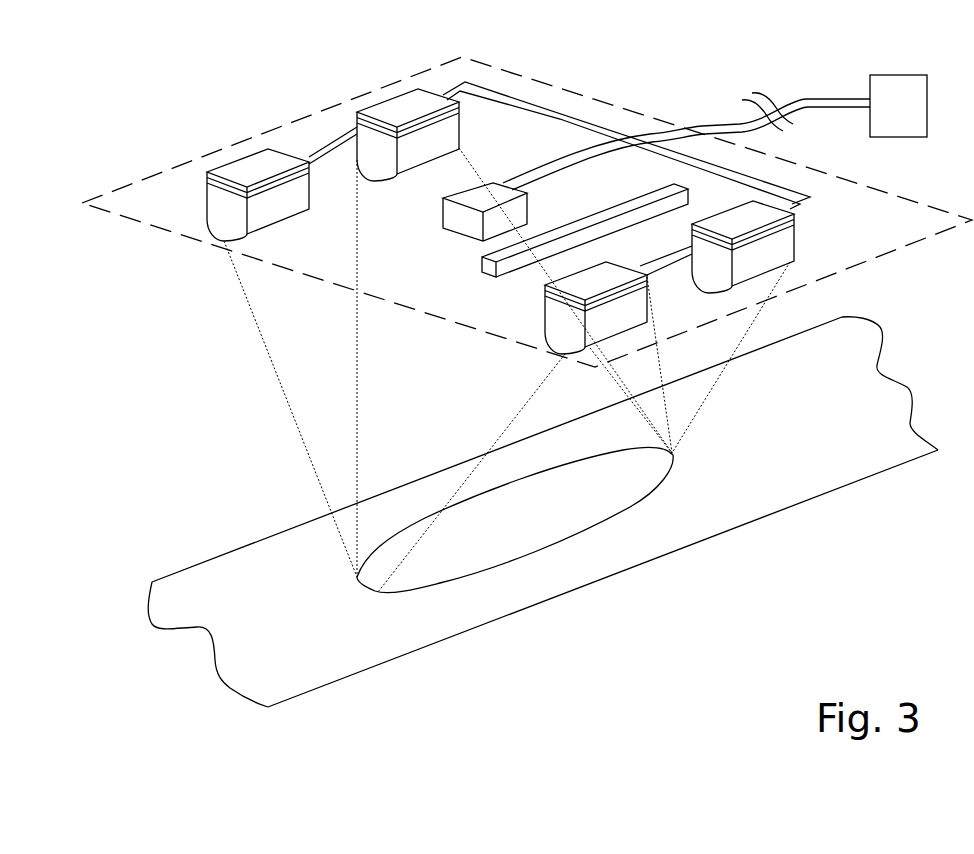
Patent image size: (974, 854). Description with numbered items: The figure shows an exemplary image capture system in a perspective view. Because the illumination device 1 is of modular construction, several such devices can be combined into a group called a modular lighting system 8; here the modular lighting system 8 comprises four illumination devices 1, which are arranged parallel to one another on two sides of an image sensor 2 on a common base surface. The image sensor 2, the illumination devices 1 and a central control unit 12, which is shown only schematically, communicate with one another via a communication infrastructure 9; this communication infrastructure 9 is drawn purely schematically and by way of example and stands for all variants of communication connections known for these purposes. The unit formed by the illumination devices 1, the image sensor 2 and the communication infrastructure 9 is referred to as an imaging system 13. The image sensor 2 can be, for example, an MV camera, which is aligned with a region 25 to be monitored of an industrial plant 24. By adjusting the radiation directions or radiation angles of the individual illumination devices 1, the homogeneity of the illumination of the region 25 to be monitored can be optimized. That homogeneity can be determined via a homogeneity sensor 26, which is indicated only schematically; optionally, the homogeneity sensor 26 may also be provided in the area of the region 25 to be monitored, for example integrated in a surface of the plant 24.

The illumination device 1 is at (258, 170).
The image sensor 2 is at (465, 217).
The modular lighting system 8 is at (842, 262).
The communication infrastructure 9 is at (583, 120).
The central control unit 12 is at (882, 118).
The imaging system 13 is at (218, 375).
The industrial plant 24 is at (265, 610).
The region to be monitored 25 is at (553, 513).
The homogeneity sensor 26 is at (492, 272).